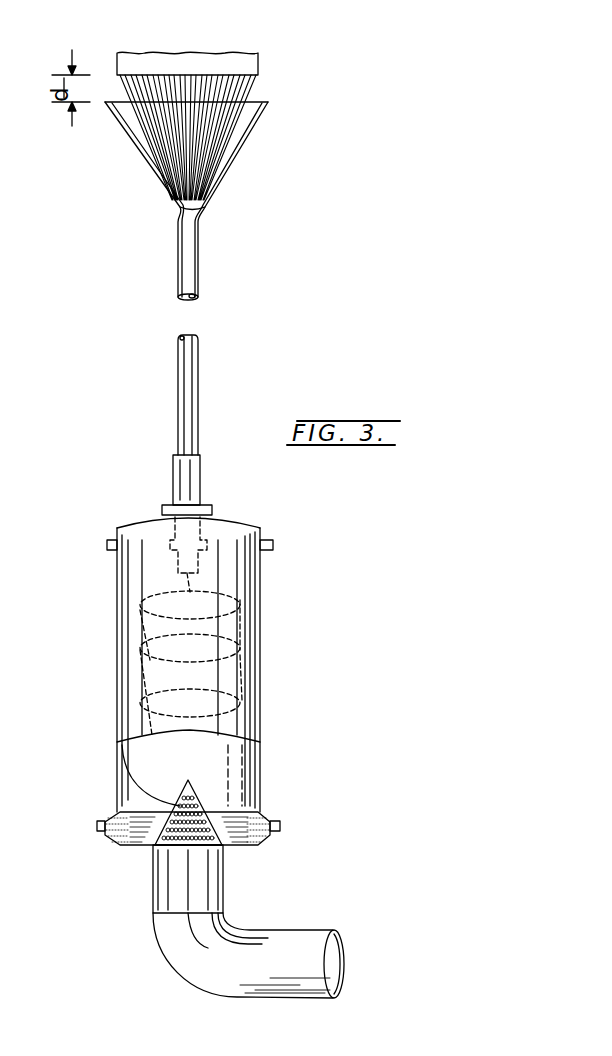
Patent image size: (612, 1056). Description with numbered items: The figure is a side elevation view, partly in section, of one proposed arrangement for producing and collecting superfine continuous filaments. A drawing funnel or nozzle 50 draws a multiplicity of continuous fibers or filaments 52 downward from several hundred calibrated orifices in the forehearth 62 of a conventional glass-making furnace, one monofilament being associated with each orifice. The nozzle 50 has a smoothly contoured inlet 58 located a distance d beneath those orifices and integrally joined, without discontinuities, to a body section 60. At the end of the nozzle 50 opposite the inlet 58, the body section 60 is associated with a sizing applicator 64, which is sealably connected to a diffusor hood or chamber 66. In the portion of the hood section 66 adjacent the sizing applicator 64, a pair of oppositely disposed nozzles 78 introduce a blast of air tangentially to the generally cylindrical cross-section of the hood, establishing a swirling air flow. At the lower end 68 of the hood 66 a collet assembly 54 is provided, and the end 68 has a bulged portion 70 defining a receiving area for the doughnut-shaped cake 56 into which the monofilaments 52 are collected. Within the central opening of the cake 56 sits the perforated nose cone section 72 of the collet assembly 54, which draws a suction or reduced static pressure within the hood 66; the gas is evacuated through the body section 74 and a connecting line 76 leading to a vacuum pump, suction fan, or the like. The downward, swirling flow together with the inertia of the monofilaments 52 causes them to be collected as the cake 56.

The drawing funnel or nozzle 50 is at (200, 358).
The continuous fibers or filaments 52 is at (240, 90).
The collet assembly 54 is at (148, 860).
The cake 56 is at (259, 812).
The inlet 58 is at (130, 150).
The body section 60 is at (185, 373).
The forehearth 62 is at (152, 60).
The sizing applicator 64 is at (192, 480).
The diffusor hood or chamber 66 is at (250, 655).
The lower end 68 is at (108, 812).
The bulged portion 70 is at (282, 842).
The nose cone section 72 is at (207, 840).
The body section 74 is at (178, 905).
The connecting line 76 is at (277, 958).
The nozzles 78 is at (107, 545).